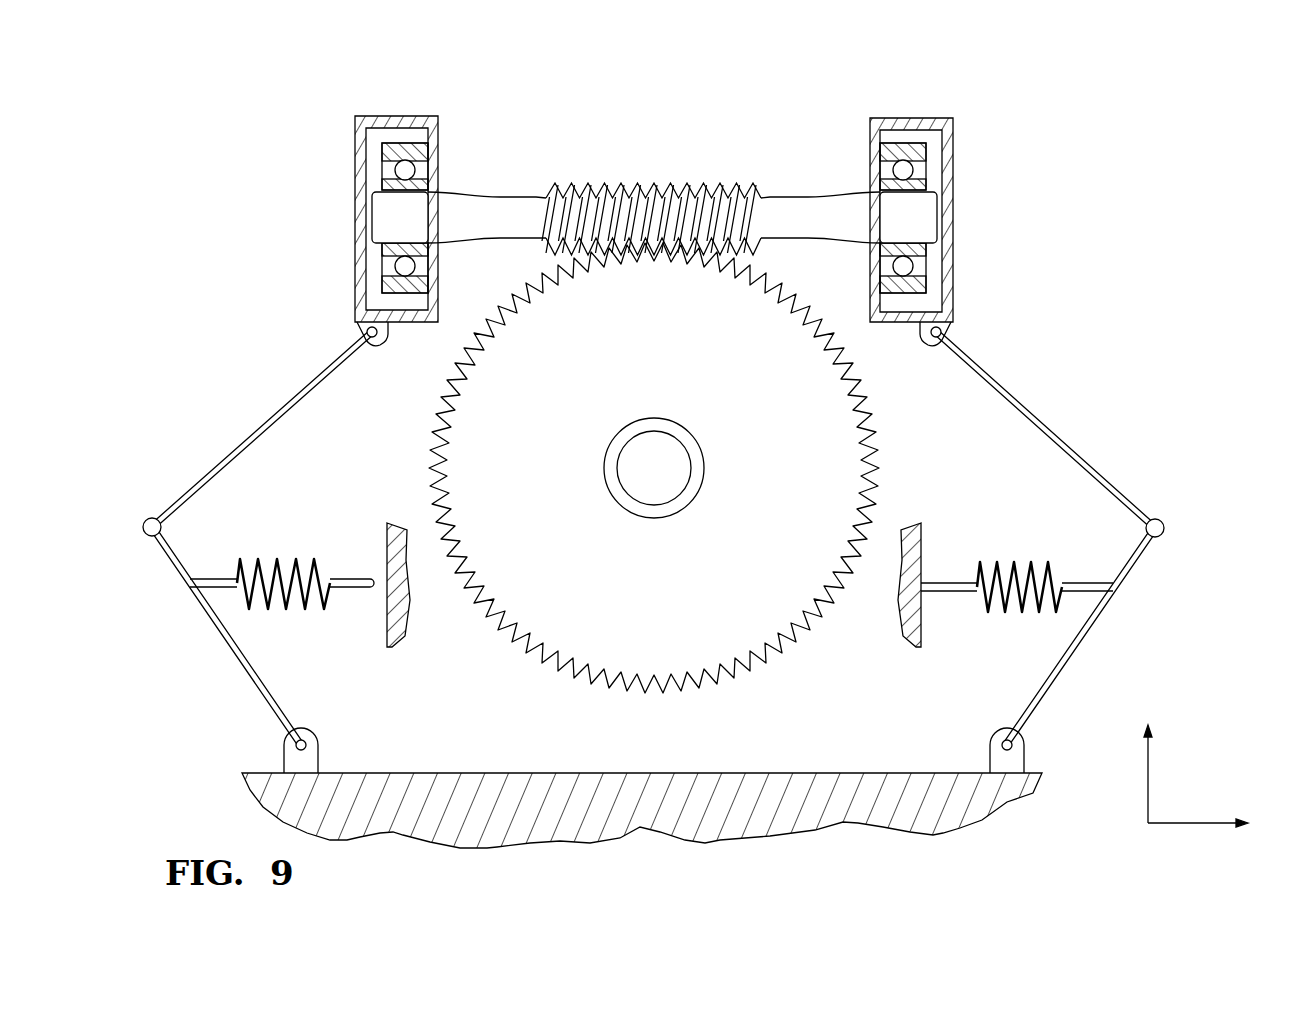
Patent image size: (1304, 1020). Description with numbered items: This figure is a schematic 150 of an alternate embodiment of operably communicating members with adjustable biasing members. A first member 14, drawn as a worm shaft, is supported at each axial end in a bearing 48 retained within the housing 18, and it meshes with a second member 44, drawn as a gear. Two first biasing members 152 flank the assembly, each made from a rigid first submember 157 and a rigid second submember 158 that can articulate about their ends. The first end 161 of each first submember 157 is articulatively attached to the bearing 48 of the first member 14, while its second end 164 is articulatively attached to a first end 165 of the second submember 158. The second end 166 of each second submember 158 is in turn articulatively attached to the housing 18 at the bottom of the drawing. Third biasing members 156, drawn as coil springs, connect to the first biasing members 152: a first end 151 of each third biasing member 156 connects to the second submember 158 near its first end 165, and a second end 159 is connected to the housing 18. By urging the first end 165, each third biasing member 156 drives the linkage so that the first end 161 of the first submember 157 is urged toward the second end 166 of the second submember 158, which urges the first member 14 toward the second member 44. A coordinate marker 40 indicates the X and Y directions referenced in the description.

The first member 14 is at (740, 183).
The housing 18 is at (466, 773).
The coordinate system 40 is at (1182, 824).
The second member 44 is at (768, 650).
The bearing 48 is at (442, 150).
The schematic 150 is at (1000, 108).
The first end 151 is at (222, 578).
The first biasing member 152 is at (87, 460).
The third biasing member 156 is at (301, 559).
The first submember 157 is at (166, 509).
The second submember 158 is at (162, 547).
The second end 159 is at (387, 572).
The first end 161 is at (364, 338).
The second end 164 is at (186, 512).
The first end 165 is at (179, 548).
The second end 166 is at (284, 745).